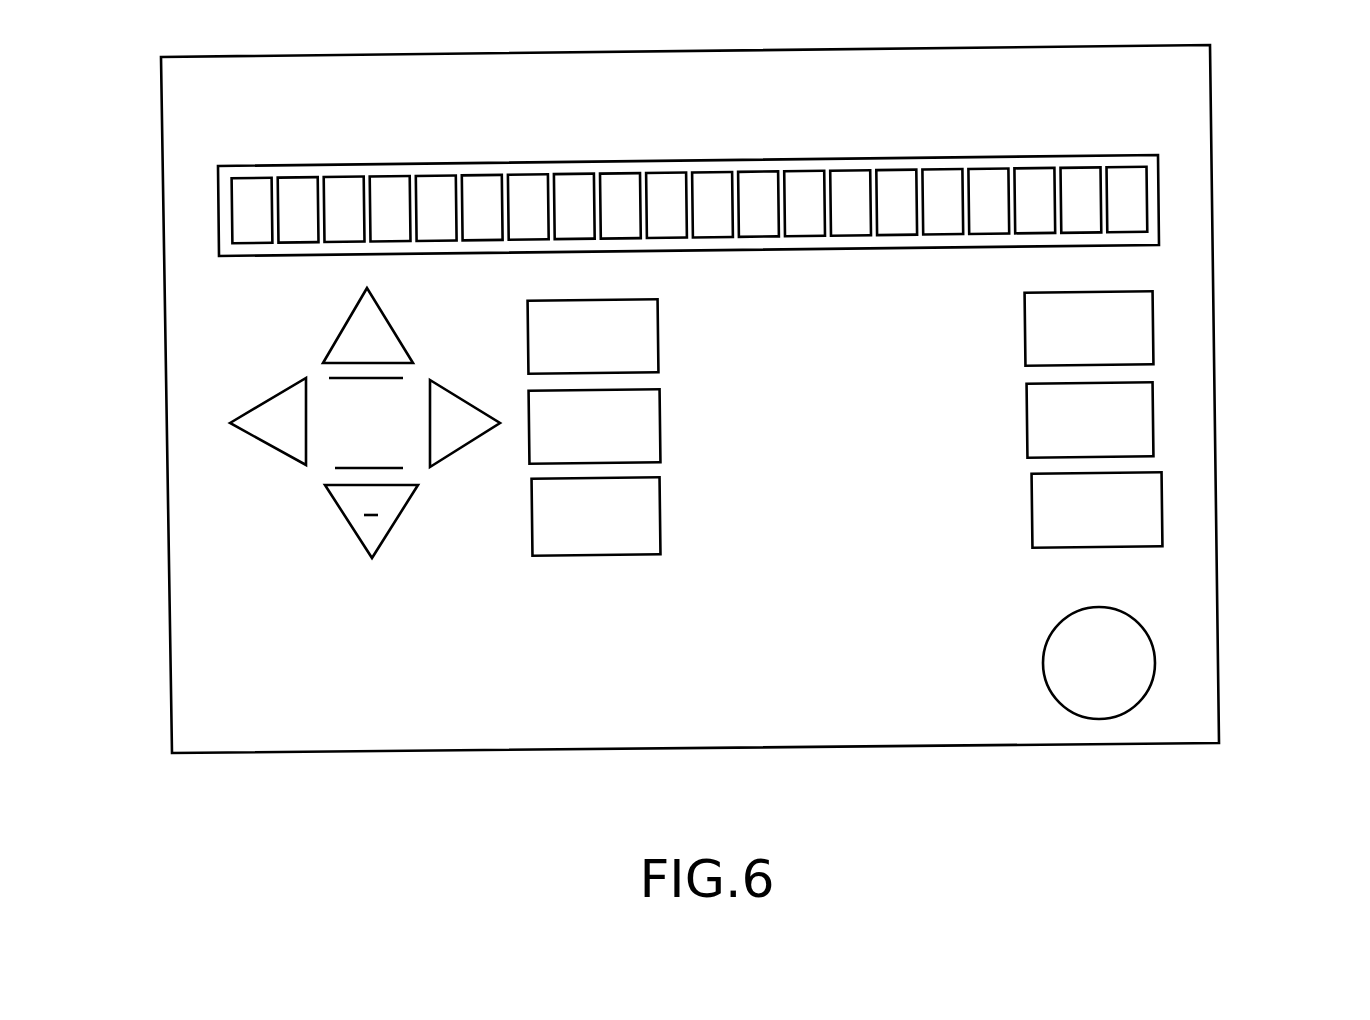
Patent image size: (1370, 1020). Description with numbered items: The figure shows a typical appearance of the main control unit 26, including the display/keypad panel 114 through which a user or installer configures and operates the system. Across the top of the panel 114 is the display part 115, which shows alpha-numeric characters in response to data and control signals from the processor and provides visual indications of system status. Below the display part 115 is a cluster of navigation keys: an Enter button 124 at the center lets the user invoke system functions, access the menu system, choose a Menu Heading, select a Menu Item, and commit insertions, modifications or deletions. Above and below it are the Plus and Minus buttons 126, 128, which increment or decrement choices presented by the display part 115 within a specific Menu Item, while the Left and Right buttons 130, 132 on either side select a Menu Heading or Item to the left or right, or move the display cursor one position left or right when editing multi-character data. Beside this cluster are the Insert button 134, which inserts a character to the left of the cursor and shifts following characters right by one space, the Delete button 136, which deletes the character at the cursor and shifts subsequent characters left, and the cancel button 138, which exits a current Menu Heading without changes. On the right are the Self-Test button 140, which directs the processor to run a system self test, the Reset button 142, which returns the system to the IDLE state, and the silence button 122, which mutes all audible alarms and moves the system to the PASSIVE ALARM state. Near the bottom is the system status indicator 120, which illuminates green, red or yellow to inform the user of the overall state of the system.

The main control unit 26 is at (1222, 120).
The display part 115 is at (1158, 197).
The panel 114 is at (782, 353).
The Enter button 124 is at (320, 472).
The Plus (+) button 126 is at (347, 321).
The Minus (−) button 128 is at (357, 533).
The Left button 130 is at (288, 462).
The Right button 132 is at (445, 460).
The Insert button 134 is at (658, 337).
The Delete button 136 is at (660, 432).
The cancel button 138 is at (660, 538).
The Self-Test button 140 is at (1153, 331).
The Reset button 142 is at (1153, 428).
The silence button 122 is at (1162, 498).
The system status indicator 120 is at (1155, 665).